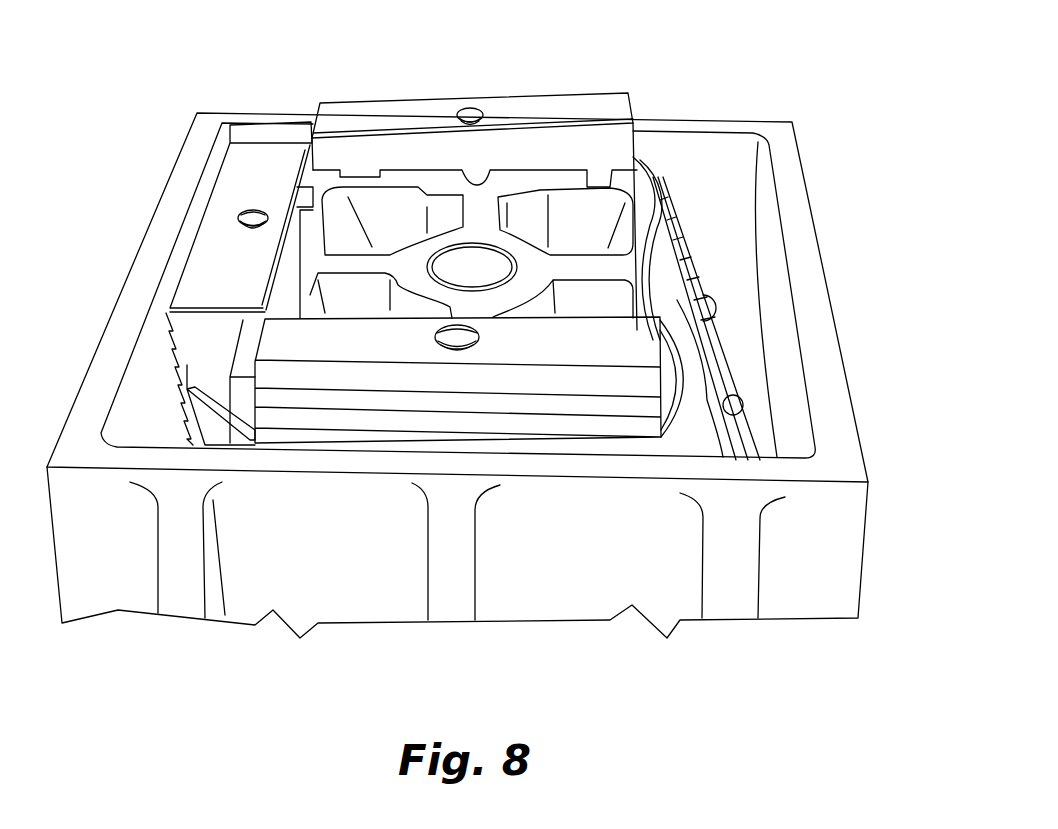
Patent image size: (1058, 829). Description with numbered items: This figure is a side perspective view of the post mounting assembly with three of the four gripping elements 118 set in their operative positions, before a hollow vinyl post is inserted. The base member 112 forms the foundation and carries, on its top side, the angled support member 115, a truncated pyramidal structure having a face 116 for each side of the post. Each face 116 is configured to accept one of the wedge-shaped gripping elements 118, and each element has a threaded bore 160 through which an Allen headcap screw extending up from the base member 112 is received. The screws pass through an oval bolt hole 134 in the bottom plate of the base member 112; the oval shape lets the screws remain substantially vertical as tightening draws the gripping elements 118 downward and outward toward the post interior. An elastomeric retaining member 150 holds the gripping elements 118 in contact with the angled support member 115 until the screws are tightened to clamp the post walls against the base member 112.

The base member 112 is at (716, 118).
The angled support member 115 is at (693, 233).
The face 116 is at (717, 410).
The gripping element 118 is at (390, 112).
The oval bolt hole 134 is at (733, 403).
The elastomeric retaining member 150 is at (203, 423).
The threaded bore 160 is at (473, 108).